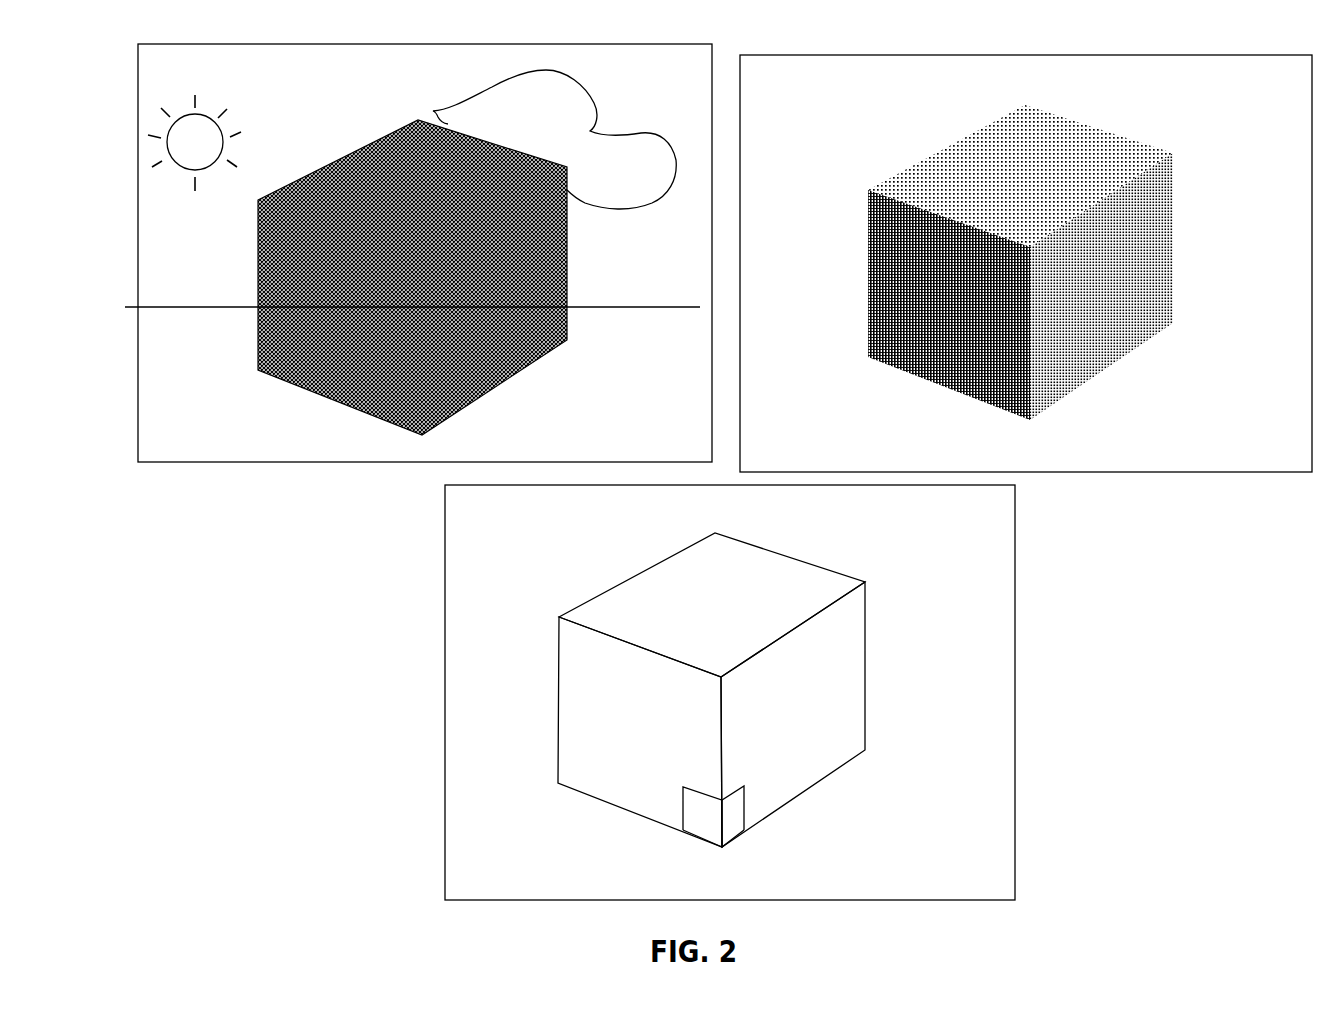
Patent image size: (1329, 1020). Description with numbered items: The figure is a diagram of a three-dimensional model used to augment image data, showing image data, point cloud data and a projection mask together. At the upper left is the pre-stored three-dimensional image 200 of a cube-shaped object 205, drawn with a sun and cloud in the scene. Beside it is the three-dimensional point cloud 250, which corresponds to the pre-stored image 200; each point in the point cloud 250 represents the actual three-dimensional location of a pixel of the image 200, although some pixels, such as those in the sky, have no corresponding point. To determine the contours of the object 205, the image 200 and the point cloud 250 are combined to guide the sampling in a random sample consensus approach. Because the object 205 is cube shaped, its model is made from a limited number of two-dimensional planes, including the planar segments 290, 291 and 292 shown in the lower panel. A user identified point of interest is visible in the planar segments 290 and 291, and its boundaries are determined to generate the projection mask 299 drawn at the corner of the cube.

The pre-stored 3D image 200 is at (216, 455).
The object 205 is at (312, 158).
The 3D point cloud 250 is at (883, 150).
The 2D planar segment 290 is at (647, 733).
The 2D planar segment 291 is at (818, 703).
The 2D planar segment 292 is at (741, 608).
The projection mask 299 is at (683, 800).